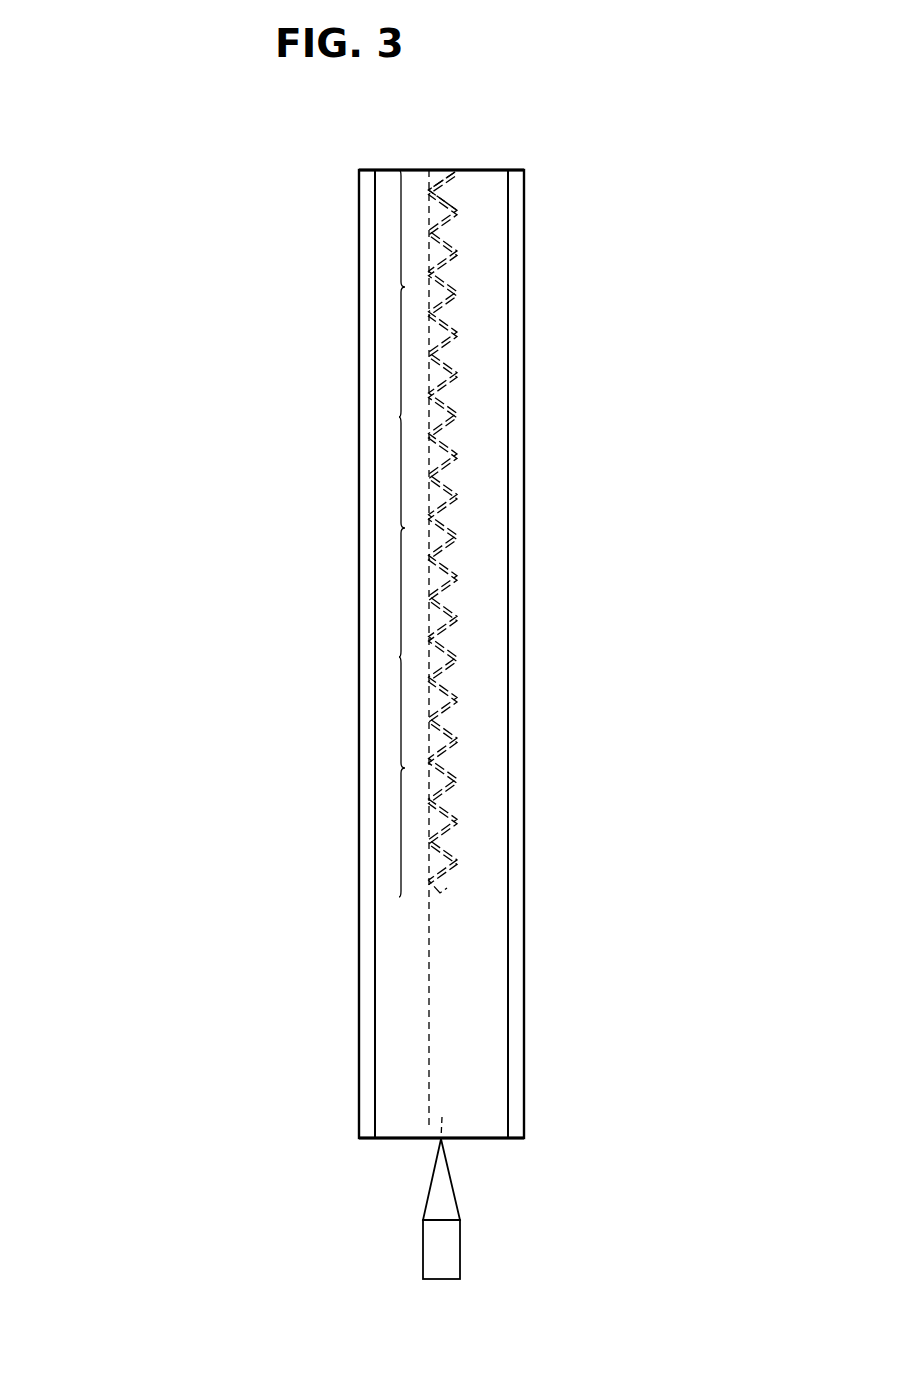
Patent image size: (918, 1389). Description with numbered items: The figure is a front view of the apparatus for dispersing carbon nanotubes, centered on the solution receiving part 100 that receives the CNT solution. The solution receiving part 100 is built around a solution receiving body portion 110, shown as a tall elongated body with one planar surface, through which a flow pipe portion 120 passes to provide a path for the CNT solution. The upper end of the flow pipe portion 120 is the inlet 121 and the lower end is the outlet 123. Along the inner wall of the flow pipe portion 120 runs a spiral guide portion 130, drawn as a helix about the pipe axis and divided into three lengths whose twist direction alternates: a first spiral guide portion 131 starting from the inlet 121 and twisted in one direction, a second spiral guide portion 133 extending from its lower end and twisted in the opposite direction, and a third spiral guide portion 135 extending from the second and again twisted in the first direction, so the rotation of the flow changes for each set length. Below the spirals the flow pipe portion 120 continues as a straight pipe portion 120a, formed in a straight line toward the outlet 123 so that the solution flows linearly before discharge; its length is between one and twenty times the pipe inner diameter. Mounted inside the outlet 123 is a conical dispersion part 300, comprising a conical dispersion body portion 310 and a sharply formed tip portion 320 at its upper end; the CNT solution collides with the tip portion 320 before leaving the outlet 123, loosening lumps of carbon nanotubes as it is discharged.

The solution receiving part 100 is at (150, 640).
The solution receiving body portion 110 is at (367, 956).
The flow pipe portion 120 is at (467, 207).
The straight pipe portion 120a is at (453, 953).
The inlet 121 is at (440, 170).
The outlet 123 is at (450, 1143).
The spiral guide portion 130 is at (231, 437).
The first spiral guide portion 131 is at (398, 287).
The second spiral guide portion 133 is at (397, 528).
The third spiral guide portion 135 is at (398, 768).
The conical dispersion part 300 is at (293, 1202).
The conical dispersion body portion 310 is at (438, 1195).
The tip portion 320 is at (442, 1114).